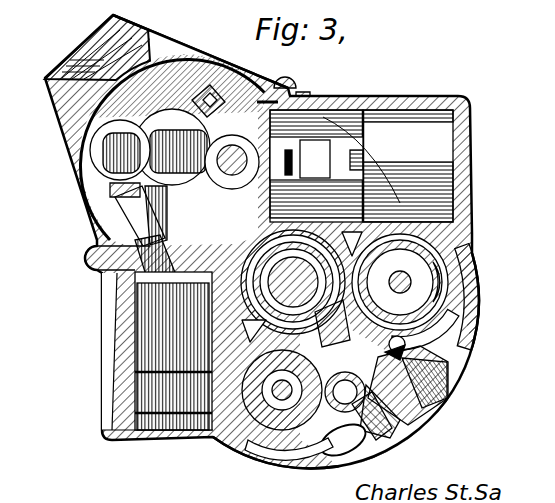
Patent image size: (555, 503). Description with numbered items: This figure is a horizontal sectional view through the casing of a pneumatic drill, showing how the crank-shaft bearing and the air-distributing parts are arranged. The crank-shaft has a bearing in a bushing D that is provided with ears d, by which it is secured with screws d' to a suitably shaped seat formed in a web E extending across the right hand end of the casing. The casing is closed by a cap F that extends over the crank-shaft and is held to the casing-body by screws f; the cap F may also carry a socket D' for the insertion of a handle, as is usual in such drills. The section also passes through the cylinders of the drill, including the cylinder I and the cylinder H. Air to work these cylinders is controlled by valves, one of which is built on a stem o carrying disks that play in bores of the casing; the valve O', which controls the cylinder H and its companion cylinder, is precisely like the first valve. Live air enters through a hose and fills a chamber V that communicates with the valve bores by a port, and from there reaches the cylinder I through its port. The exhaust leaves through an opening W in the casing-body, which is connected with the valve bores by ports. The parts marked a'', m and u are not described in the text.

The socket D' is at (97, 45).
The bushing D is at (183, 130).
The screws d' is at (228, 81).
The ears d is at (289, 66).
The screws f is at (303, 90).
The cylinder H is at (323, 117).
The cap F is at (95, 150).
The connecting rod a'' is at (117, 235).
The web E is at (135, 270).
The cylinder I is at (187, 400).
The stem o is at (282, 402).
The slot m is at (302, 455).
The chamber V is at (346, 412).
The slot u is at (405, 410).
The exhaust opening W is at (438, 399).
The valve O' is at (435, 282).